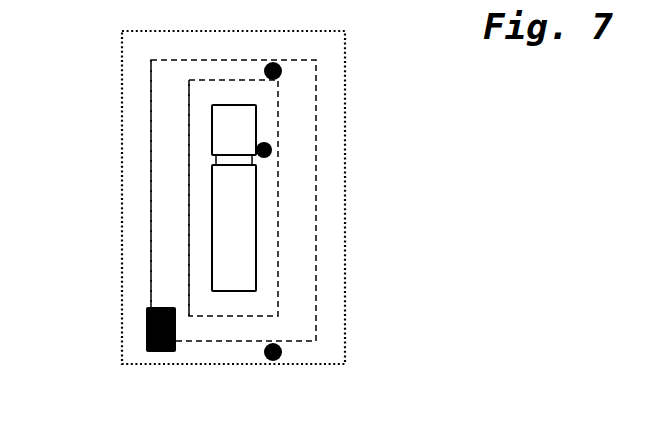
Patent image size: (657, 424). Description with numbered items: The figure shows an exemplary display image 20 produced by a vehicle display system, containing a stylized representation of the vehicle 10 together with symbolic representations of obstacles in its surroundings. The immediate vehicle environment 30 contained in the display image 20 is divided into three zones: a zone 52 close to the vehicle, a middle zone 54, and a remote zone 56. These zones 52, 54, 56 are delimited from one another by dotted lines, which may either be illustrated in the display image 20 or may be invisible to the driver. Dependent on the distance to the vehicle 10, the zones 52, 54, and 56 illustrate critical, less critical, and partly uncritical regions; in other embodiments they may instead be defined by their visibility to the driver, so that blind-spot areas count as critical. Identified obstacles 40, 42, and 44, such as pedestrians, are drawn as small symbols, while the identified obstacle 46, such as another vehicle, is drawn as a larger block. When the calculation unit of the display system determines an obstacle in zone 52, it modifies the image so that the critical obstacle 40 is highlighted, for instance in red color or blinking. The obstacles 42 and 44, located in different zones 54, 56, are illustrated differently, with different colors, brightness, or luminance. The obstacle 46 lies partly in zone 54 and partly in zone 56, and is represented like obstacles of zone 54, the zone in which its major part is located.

The vehicle 10 is at (242, 193).
The display image 20 is at (345, 90).
The immediate vehicle environment 30 is at (307, 248).
The identified obstacle 40 is at (274, 150).
The identified obstacle 42 is at (285, 67).
The identified obstacle 44 is at (290, 357).
The identified obstacle 46 is at (130, 334).
The zone close to the vehicle 52 is at (197, 136).
The middle zone 54 is at (171, 212).
The remote zone 56 is at (133, 280).